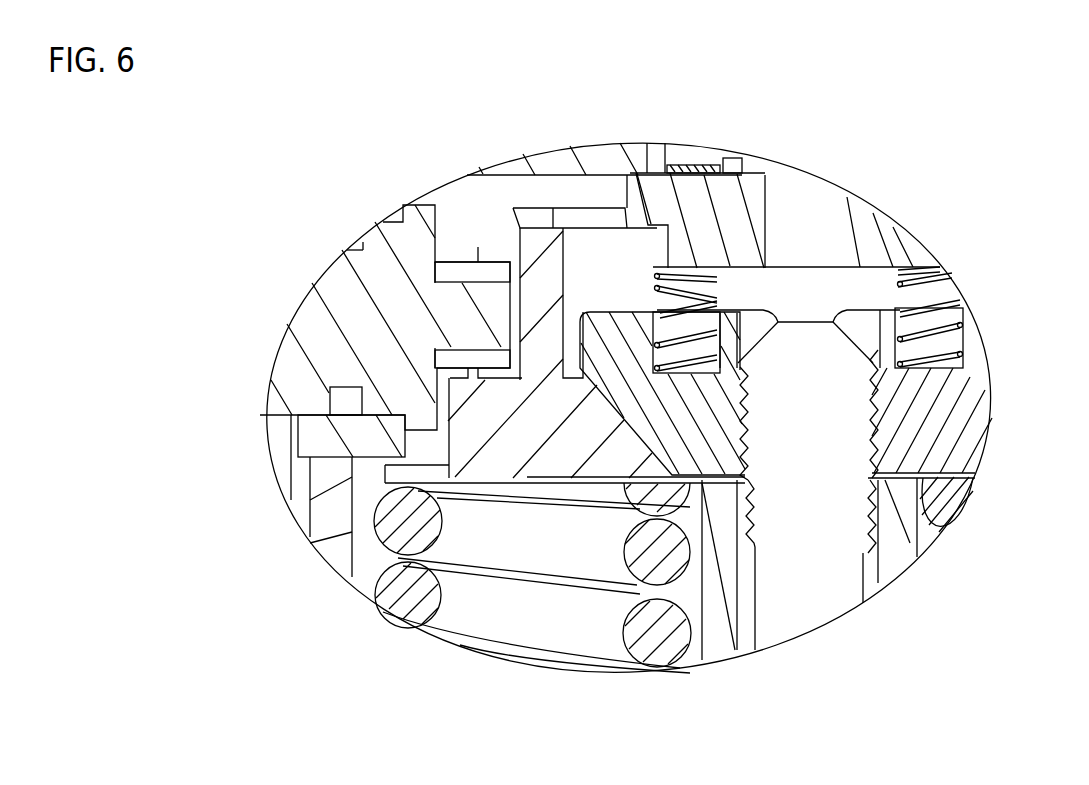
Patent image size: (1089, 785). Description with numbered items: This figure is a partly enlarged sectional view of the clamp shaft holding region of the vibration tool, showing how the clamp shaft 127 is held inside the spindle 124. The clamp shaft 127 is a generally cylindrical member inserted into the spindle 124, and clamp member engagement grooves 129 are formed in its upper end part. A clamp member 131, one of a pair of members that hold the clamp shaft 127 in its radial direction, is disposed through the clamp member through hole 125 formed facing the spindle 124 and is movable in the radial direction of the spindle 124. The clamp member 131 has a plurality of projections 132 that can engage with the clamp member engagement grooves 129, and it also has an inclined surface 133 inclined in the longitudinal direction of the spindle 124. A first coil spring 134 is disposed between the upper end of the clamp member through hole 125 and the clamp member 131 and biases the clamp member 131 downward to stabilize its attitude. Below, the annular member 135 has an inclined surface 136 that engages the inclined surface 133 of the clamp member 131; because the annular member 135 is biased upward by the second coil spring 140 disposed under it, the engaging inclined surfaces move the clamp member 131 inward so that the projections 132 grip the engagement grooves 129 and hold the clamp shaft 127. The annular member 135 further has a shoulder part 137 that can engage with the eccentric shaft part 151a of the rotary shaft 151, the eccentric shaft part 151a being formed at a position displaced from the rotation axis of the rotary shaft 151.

The spindle 124 is at (719, 643).
The clamp member through hole 125 is at (735, 295).
The clamp shaft 127 is at (812, 592).
The clamp member engagement grooves 129 is at (747, 470).
The clamp member 131 is at (630, 330).
The projections 132 is at (745, 398).
The inclined surface 133 is at (640, 442).
The first coil spring 134 is at (700, 270).
The annular member 135 is at (553, 457).
The inclined surface 136 is at (621, 455).
The shoulder part 137 is at (483, 372).
The second coil spring 140 is at (472, 613).
The rotary shaft 151 is at (386, 285).
The eccentric shaft part 151a is at (463, 310).